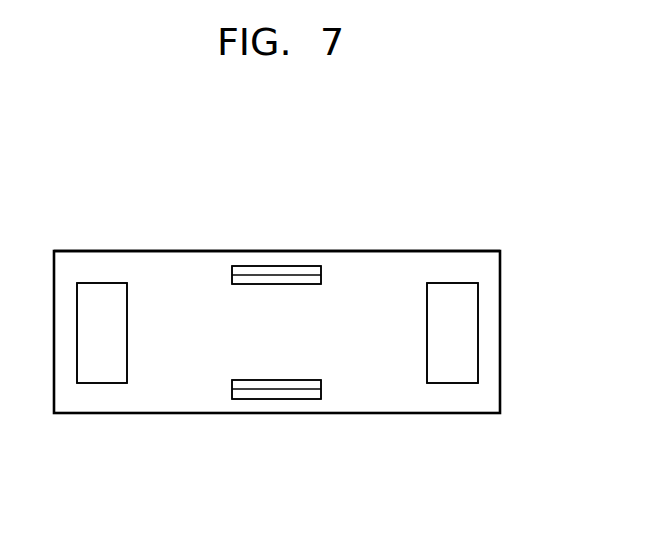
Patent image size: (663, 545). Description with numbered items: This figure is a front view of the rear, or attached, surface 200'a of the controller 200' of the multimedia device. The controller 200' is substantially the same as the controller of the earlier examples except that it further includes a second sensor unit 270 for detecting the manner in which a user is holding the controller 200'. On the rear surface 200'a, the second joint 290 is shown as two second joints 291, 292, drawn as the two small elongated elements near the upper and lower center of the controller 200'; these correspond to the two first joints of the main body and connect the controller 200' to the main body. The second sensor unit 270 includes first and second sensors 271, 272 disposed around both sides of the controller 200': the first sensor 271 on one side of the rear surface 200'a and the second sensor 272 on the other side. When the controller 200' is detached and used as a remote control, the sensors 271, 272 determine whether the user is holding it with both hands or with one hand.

The controller 200' is at (331, 325).
The rear surface 200'a is at (277, 229).
The second joint 290 is at (304, 194).
The second joint 291 is at (276, 268).
The second joint 292 is at (278, 397).
The second sensor unit 270 is at (481, 470).
The first sensor 271 is at (100, 382).
The second sensor 272 is at (450, 382).